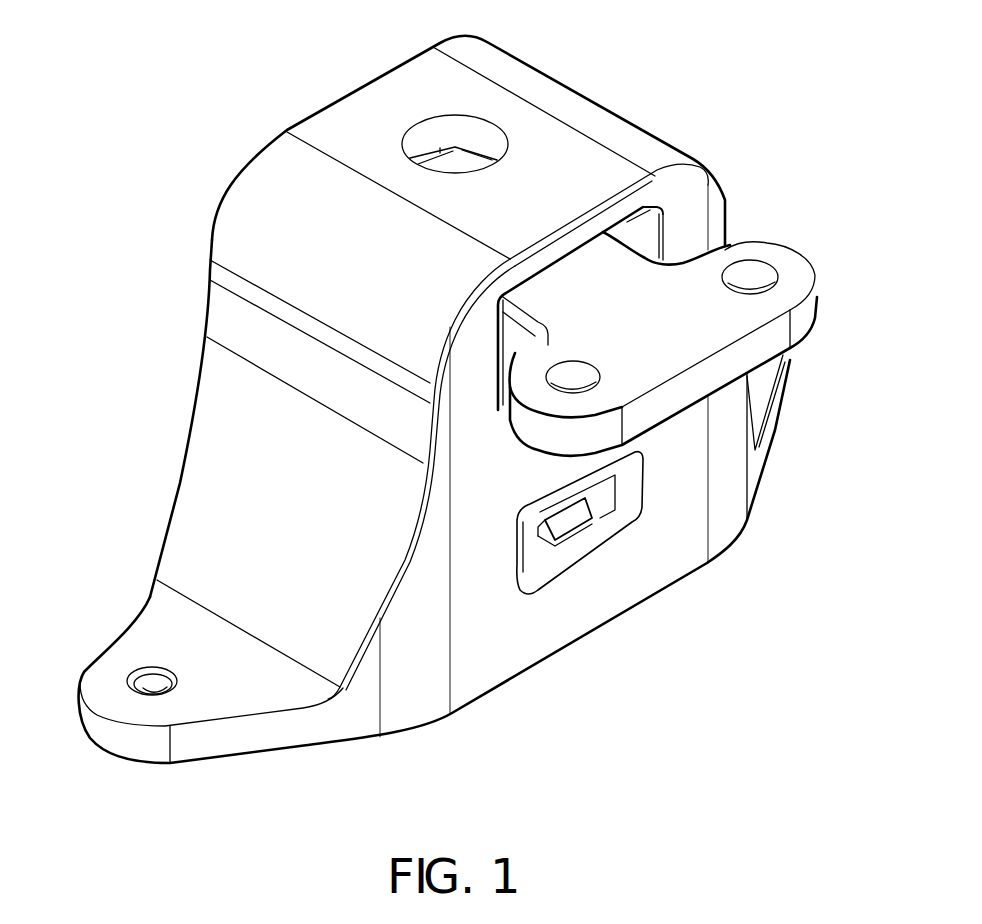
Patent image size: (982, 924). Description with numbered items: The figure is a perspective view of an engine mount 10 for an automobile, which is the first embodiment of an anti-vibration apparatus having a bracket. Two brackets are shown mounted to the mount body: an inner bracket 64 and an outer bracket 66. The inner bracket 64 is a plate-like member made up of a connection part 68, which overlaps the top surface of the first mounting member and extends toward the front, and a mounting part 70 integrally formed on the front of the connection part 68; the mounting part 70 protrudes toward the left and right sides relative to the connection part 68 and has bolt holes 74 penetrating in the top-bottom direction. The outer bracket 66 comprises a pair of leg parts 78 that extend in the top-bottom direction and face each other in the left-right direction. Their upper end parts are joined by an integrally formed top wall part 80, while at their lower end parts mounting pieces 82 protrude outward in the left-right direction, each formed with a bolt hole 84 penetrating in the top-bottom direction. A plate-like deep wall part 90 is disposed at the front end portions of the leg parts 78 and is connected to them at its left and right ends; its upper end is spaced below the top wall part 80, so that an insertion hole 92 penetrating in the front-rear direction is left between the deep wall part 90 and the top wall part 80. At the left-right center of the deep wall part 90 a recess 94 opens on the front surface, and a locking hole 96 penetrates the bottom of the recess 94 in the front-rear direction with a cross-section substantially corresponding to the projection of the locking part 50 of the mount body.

The engine mount 10 is at (762, 131).
The locking part 50 is at (556, 511).
The inner bracket 64 is at (792, 244).
The outer bracket 66 is at (226, 190).
The connection part 68 is at (577, 277).
The mounting part 70 is at (803, 320).
The bolt holes 74 is at (590, 390).
The leg parts 78 is at (213, 450).
The top wall part 80 is at (415, 78).
The mounting pieces 82 is at (130, 652).
The bolt hole 84 is at (152, 690).
The deep wall part 90 is at (671, 513).
The insertion hole 92 is at (653, 207).
The recess 94 is at (540, 535).
The locking hole 96 is at (548, 550).